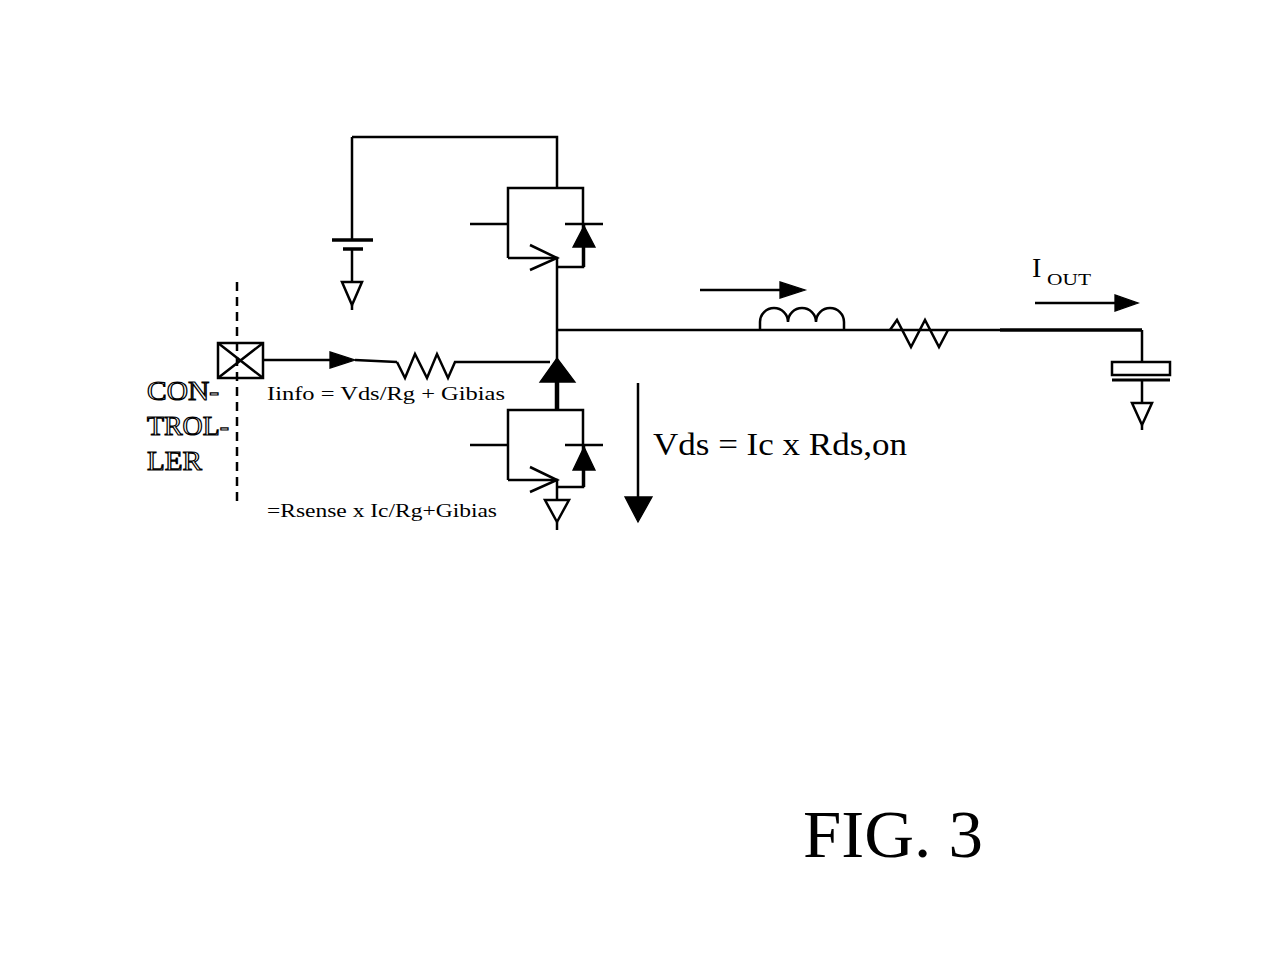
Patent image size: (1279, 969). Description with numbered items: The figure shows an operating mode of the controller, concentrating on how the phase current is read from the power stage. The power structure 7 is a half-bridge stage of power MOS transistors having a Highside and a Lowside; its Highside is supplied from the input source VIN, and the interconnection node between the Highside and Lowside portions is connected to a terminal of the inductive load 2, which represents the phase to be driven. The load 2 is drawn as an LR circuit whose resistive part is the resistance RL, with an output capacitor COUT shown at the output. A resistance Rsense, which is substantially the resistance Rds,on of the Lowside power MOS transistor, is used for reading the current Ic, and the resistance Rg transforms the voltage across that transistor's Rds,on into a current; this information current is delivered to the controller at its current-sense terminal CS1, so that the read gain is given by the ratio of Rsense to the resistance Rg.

The power structure 7 is at (598, 196).
The inductive load 2 is at (883, 196).
The input voltage source VIN is at (412, 223).
The controller current-sense input CS1 is at (197, 391).
The resistance Rg is at (473, 349).
The resistance RL is at (919, 308).
The output capacitor COUT is at (1181, 380).